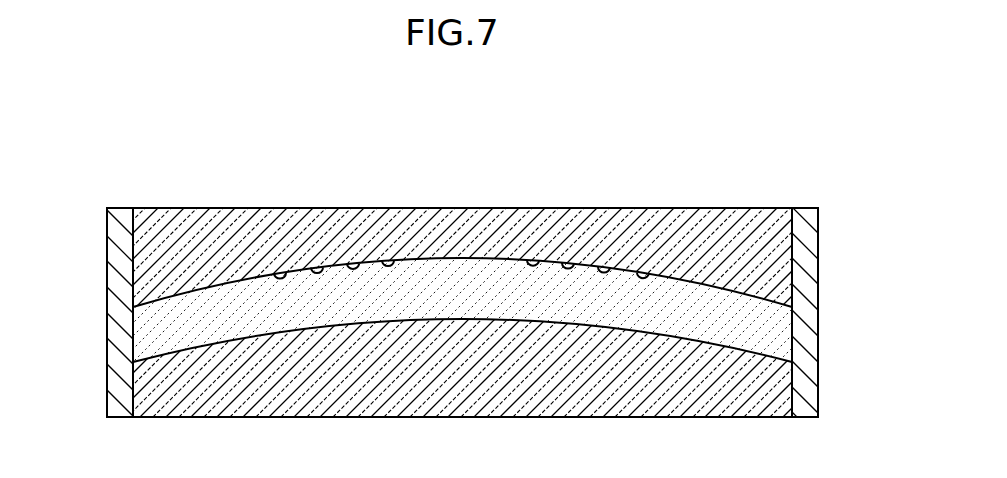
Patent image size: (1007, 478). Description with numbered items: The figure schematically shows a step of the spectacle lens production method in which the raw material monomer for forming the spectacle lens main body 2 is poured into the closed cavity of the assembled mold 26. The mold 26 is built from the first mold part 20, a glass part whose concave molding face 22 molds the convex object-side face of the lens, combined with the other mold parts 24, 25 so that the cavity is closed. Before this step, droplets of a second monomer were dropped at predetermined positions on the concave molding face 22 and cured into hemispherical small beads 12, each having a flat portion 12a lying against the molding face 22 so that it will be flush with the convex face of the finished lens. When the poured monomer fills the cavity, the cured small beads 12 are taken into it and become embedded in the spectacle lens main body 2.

The first mold part 20 is at (200, 225).
The concave molding face 22 is at (245, 290).
The mold part 24 is at (655, 392).
The mold part 25 is at (120, 343).
The mold 26 is at (573, 197).
The small bead 12 is at (569, 262).
The flat portion 12a is at (604, 266).
The spectacle lens main body 2 is at (707, 315).